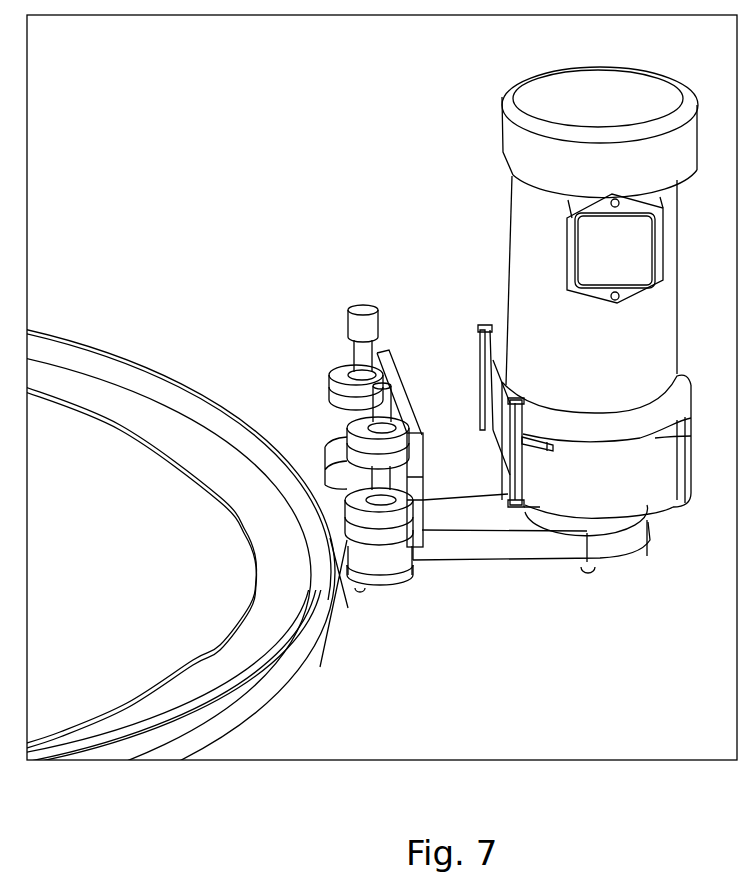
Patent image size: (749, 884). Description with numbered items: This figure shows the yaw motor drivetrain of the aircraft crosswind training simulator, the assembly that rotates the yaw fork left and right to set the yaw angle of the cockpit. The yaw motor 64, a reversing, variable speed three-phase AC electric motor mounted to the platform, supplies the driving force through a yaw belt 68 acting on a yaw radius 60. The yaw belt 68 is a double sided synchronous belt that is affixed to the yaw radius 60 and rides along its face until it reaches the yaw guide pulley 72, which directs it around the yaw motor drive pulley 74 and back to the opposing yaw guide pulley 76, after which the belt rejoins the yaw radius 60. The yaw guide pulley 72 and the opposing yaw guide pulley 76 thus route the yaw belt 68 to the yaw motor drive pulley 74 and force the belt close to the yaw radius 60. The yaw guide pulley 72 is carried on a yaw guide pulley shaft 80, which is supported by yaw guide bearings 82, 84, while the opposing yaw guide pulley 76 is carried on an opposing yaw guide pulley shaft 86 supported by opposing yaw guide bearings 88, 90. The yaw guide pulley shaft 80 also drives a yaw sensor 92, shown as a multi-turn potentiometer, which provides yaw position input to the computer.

The yaw radius 60 is at (178, 438).
The yaw motor 64 is at (635, 102).
The yaw belt 68 is at (527, 549).
The yaw guide pulley 72 is at (327, 483).
The yaw motor drive pulley 74 is at (608, 522).
The opposing yaw guide pulley 76 is at (393, 572).
The yaw guide pulley shaft 80 is at (368, 352).
The yaw guide bearing 82 is at (347, 428).
The yaw guide bearing 84 is at (336, 368).
The opposing yaw guide pulley shaft 86 is at (384, 392).
The opposing yaw guide bearing 88 is at (413, 545).
The opposing yaw guide bearing 90 is at (423, 465).
The yaw sensor 92 is at (360, 312).